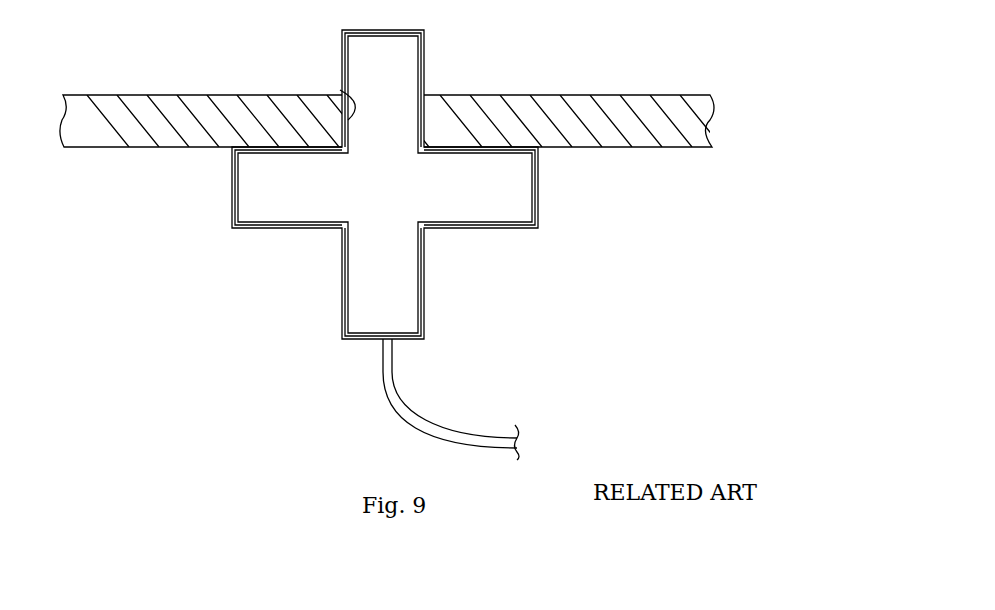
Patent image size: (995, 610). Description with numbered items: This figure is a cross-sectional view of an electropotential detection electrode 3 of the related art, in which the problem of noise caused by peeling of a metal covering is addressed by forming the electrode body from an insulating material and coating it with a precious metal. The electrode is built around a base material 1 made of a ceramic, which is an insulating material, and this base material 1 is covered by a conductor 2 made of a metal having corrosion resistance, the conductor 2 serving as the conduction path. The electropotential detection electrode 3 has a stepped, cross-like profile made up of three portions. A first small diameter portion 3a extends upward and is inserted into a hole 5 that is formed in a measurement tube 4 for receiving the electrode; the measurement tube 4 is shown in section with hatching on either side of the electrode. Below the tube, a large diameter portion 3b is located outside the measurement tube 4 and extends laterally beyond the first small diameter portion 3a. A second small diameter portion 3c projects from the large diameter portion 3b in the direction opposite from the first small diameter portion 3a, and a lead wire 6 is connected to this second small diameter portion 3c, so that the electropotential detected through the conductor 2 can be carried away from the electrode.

The base material 1 is at (297, 198).
The conductor 2 is at (341, 283).
The electropotential detection electrode 3 is at (427, 202).
The first small diameter portion 3a is at (426, 47).
The large diameter portion 3b is at (540, 206).
The second small diameter portion 3c is at (425, 287).
The measurement tube 4 is at (669, 95).
The hole 5 is at (340, 90).
The lead wire 6 is at (407, 418).